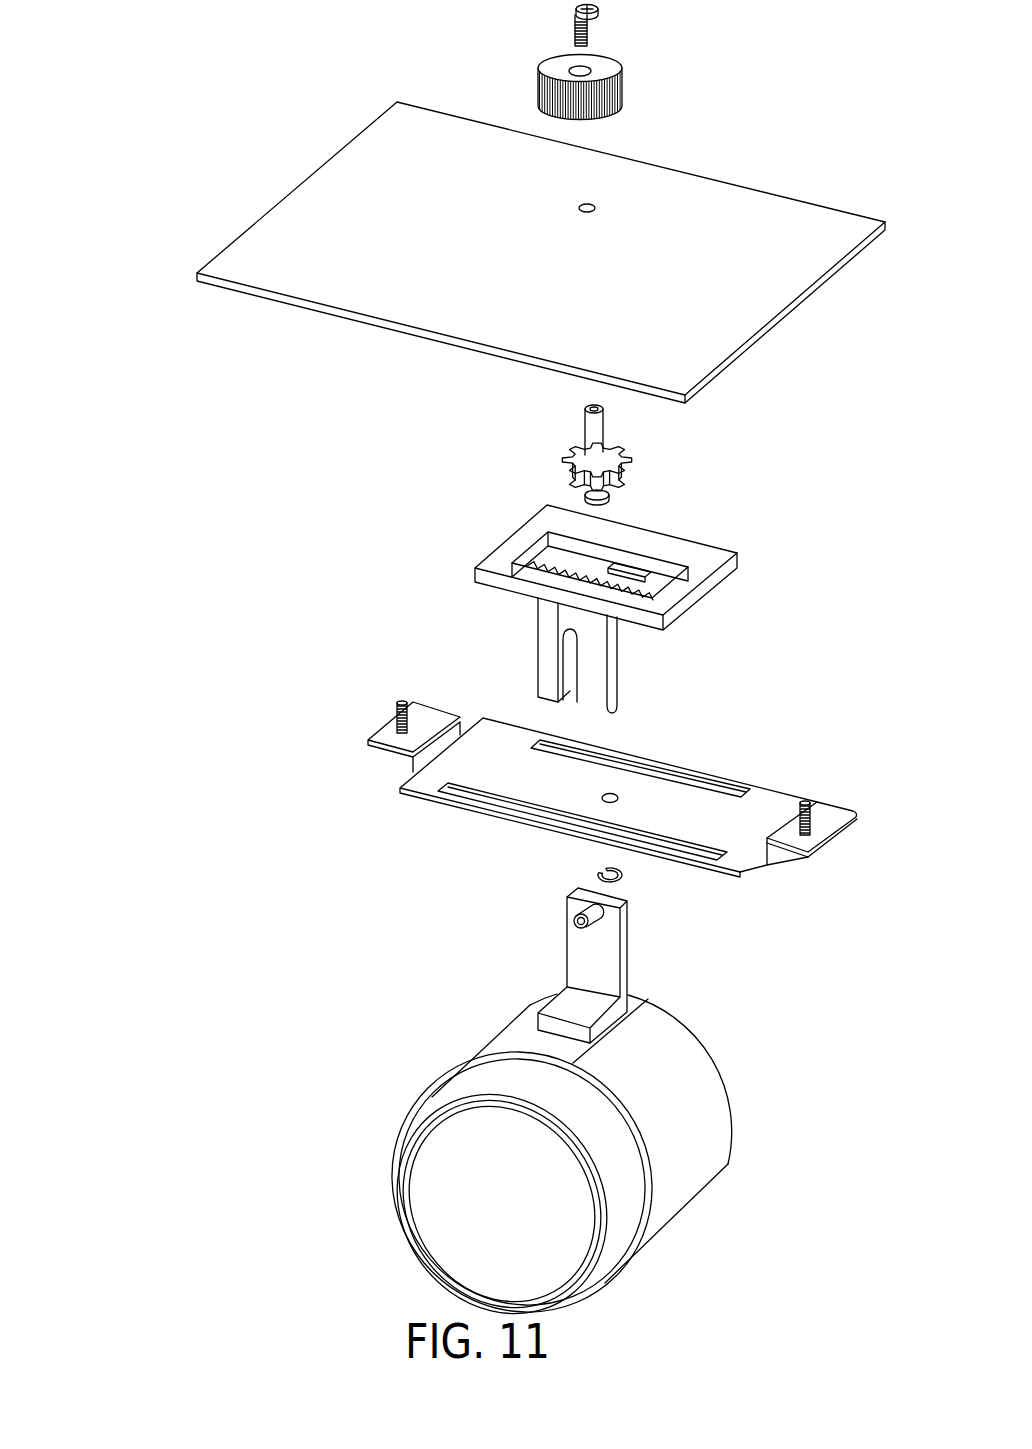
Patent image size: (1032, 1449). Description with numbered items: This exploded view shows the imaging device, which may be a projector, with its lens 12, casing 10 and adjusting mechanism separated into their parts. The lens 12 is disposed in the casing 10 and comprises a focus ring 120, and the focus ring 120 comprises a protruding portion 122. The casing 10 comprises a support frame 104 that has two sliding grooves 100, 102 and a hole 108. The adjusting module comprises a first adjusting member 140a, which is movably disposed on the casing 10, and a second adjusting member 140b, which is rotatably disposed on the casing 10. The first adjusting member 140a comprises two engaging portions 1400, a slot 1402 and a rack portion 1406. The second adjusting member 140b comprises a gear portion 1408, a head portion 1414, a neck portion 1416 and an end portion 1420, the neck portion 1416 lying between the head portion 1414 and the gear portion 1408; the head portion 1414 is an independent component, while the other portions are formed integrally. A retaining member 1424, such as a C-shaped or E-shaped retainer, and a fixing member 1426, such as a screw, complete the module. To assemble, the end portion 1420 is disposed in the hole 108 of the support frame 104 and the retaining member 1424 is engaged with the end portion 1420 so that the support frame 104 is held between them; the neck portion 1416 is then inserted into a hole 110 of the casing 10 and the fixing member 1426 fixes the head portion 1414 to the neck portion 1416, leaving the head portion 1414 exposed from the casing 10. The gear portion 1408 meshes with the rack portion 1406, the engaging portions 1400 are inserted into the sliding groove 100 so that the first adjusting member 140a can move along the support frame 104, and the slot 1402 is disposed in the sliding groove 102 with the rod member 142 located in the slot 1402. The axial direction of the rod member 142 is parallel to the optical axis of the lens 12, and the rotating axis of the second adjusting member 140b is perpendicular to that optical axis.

The casing 10 is at (810, 200).
The hole 110 is at (592, 207).
The second adjusting member 140b is at (166, 109).
The fixing member 1426 is at (590, 9).
The head portion 1414 is at (538, 88).
The neck portion 1416 is at (583, 422).
The gear portion 1408 is at (562, 458).
The end portion 1420 is at (587, 498).
The first adjusting member 140a is at (478, 553).
The rack portion 1406 is at (537, 565).
The engaging portions 1400 is at (630, 570).
The slot 1402 is at (585, 672).
The sliding groove 100 is at (735, 784).
The hole 108 is at (608, 797).
The support frame 104 is at (765, 867).
The sliding groove 102 is at (688, 855).
The retaining member 1424 is at (598, 875).
The protruding portion 122 is at (628, 940).
The rod member 142 is at (576, 920).
The focus ring 120 is at (705, 1105).
The lens 12 is at (460, 1220).